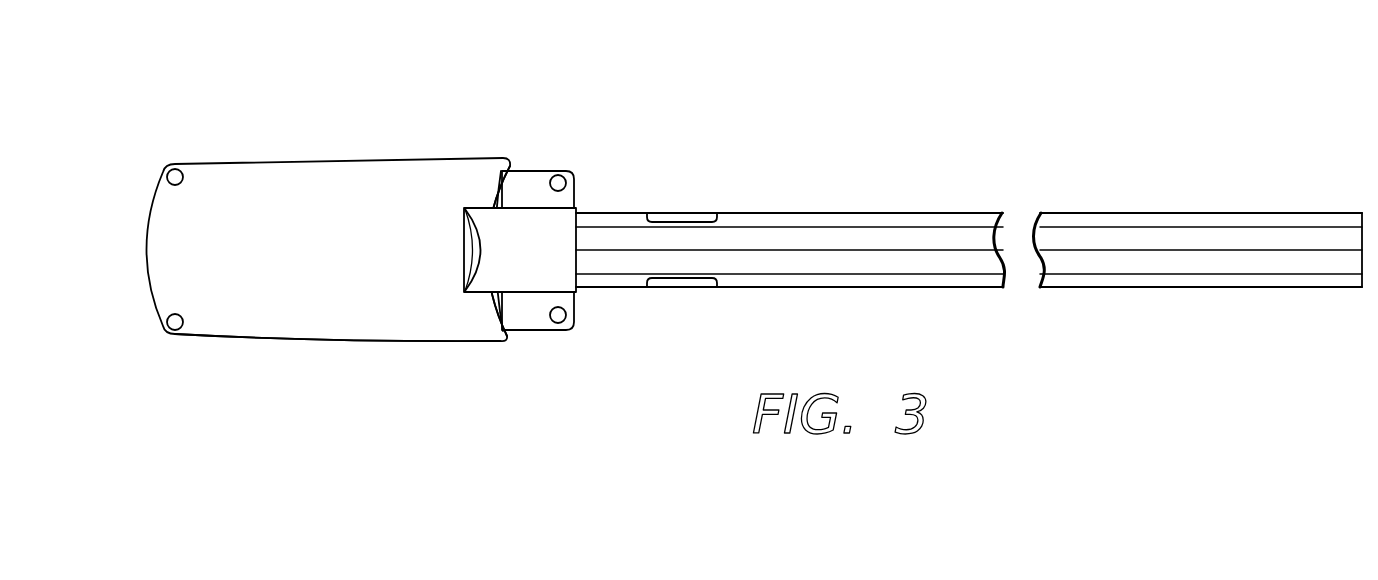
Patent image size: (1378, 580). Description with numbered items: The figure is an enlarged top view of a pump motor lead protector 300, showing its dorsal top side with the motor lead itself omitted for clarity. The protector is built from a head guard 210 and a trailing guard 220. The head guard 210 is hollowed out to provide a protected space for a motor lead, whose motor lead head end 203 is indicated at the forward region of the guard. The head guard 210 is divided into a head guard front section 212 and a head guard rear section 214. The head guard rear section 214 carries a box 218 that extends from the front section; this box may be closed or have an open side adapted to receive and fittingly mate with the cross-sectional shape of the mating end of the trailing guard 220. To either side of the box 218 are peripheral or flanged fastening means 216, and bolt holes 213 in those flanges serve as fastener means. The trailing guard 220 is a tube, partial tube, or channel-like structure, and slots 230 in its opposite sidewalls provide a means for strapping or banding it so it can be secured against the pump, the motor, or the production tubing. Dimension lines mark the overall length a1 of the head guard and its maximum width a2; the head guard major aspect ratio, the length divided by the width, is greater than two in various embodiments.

The motor lead head end 203 is at (182, 317).
The head guard 210 is at (318, 152).
The head guard front section 212 is at (322, 341).
The bolt holes 213 is at (568, 314).
The head guard rear section 214 is at (535, 332).
The peripheral or flanged fastening means 216 is at (507, 313).
The box 218 is at (549, 257).
The trailing guard 220 is at (857, 210).
The slots 230 is at (692, 218).
The motor lead protector 300 is at (1095, 153).
The overall length a1 is at (150, 193).
The maximum width a2 is at (487, 388).